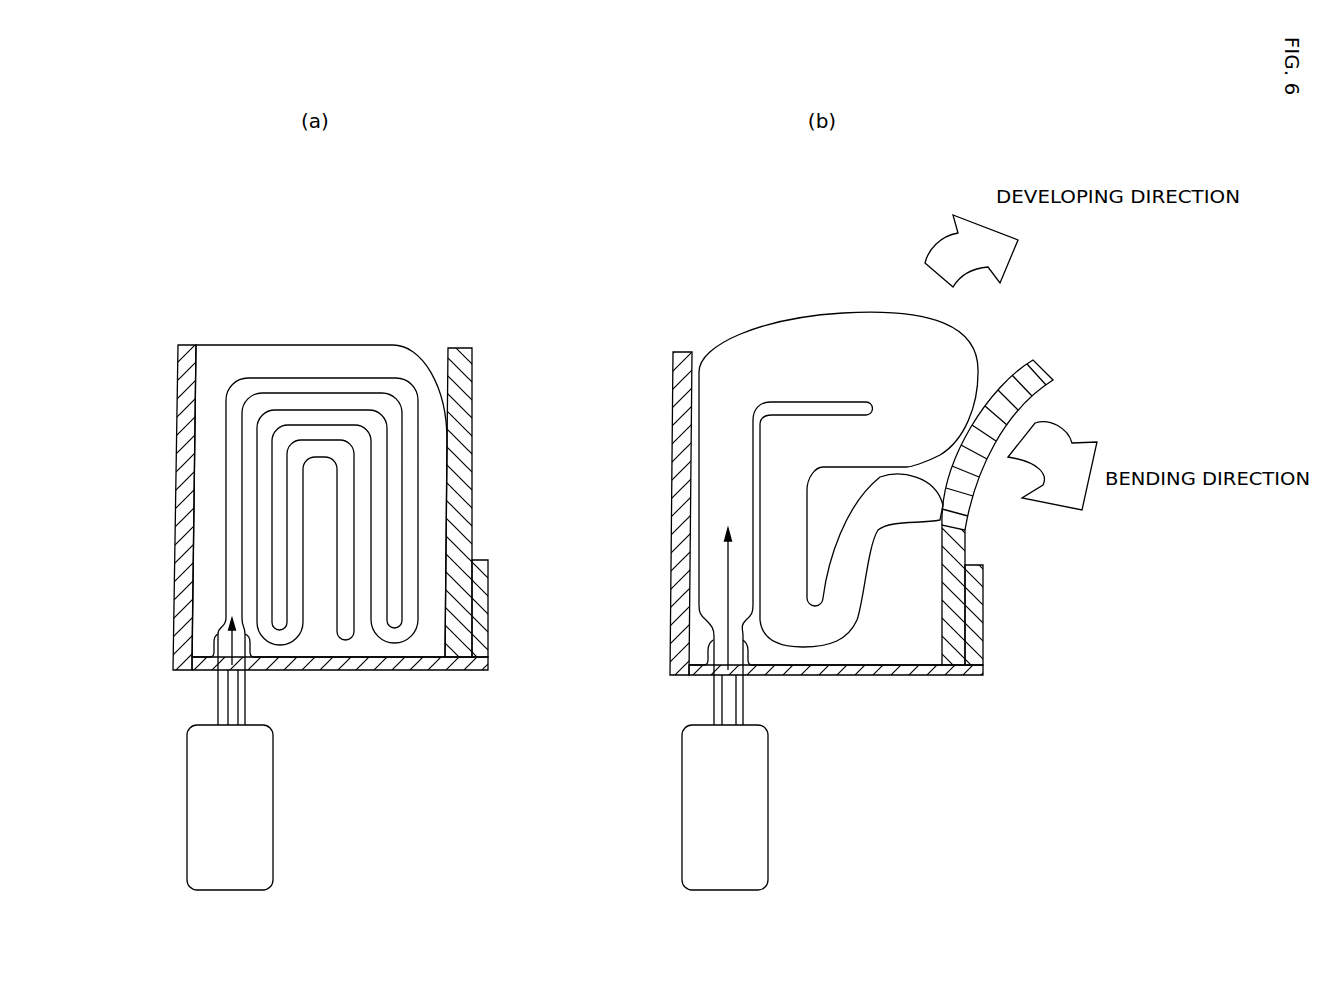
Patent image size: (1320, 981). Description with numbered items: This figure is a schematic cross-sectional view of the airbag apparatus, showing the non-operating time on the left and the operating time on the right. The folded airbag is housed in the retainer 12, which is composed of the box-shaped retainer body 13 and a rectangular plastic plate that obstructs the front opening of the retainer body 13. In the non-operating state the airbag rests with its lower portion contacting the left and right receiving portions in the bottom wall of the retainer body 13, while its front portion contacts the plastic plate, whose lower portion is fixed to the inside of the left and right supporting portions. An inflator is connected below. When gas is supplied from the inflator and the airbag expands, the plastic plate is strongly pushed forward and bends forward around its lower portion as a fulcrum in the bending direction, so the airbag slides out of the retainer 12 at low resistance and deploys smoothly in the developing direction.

The retainer 12 is at (267, 450).
The retainer body 13 is at (175, 519).